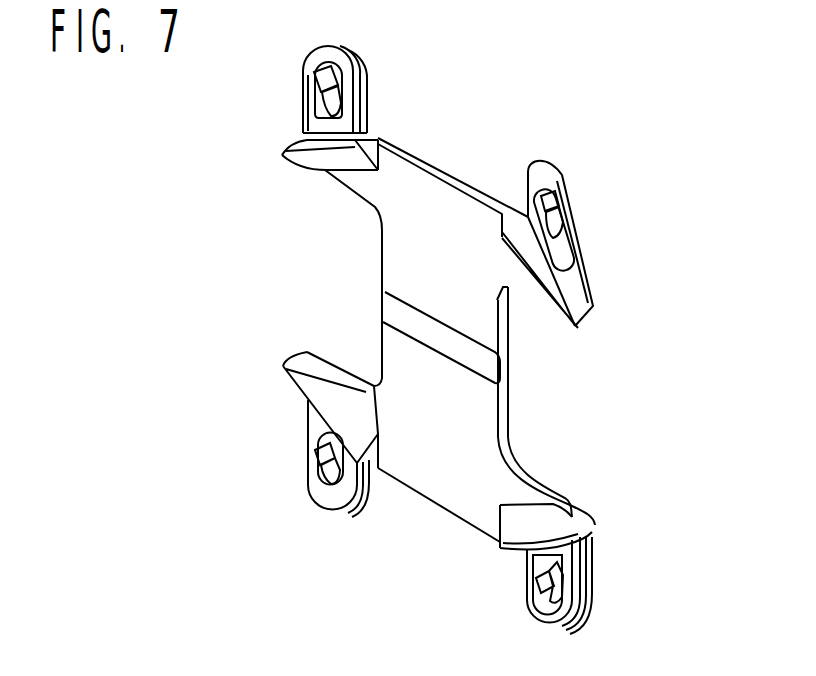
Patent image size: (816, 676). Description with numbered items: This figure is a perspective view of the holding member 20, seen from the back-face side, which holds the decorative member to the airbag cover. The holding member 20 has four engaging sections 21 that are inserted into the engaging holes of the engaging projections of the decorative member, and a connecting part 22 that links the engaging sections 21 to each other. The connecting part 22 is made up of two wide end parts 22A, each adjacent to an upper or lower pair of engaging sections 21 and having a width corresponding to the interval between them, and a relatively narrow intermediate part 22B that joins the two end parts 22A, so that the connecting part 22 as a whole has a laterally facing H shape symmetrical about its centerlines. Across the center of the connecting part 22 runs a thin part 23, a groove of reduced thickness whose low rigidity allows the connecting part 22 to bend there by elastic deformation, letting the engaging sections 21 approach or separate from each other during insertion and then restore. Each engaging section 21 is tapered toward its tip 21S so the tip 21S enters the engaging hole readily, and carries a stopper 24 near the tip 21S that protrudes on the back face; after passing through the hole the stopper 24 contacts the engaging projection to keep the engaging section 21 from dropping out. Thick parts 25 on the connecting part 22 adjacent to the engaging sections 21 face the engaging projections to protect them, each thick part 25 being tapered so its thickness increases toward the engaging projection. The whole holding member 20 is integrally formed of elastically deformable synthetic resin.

The holding member 20 is at (245, 268).
The engaging section 21 is at (366, 70).
The tip 21S is at (325, 50).
The connecting part 22 is at (388, 262).
The end part 22A is at (433, 176).
The intermediate part 22B is at (503, 413).
The thin part 23 is at (395, 312).
The stopper 24 is at (316, 85).
The thick part 25 is at (282, 153).